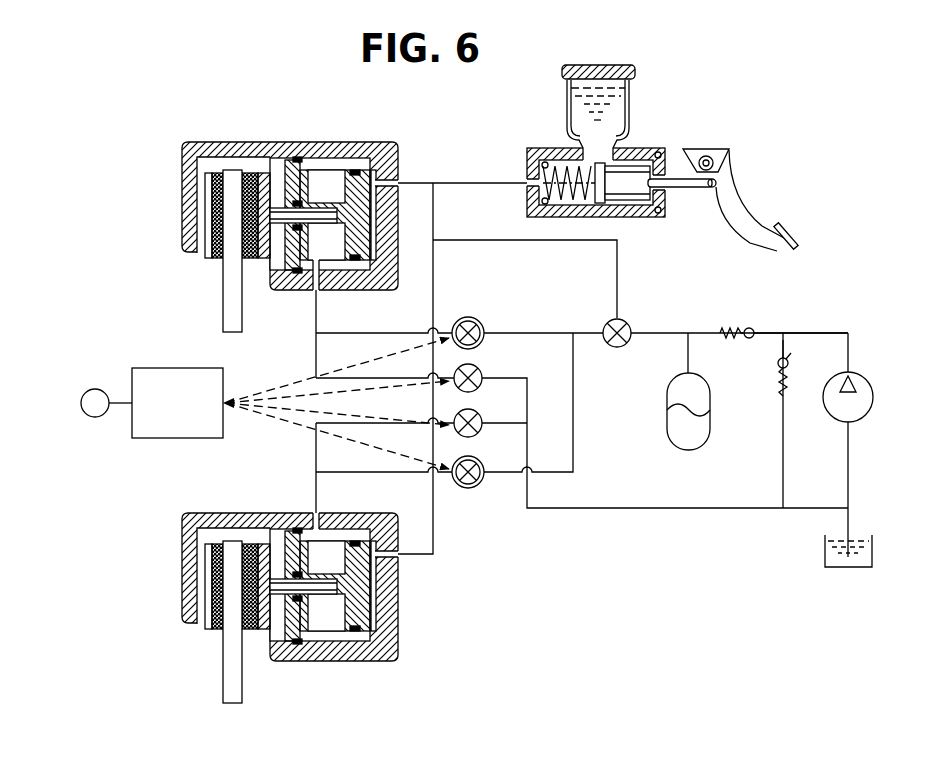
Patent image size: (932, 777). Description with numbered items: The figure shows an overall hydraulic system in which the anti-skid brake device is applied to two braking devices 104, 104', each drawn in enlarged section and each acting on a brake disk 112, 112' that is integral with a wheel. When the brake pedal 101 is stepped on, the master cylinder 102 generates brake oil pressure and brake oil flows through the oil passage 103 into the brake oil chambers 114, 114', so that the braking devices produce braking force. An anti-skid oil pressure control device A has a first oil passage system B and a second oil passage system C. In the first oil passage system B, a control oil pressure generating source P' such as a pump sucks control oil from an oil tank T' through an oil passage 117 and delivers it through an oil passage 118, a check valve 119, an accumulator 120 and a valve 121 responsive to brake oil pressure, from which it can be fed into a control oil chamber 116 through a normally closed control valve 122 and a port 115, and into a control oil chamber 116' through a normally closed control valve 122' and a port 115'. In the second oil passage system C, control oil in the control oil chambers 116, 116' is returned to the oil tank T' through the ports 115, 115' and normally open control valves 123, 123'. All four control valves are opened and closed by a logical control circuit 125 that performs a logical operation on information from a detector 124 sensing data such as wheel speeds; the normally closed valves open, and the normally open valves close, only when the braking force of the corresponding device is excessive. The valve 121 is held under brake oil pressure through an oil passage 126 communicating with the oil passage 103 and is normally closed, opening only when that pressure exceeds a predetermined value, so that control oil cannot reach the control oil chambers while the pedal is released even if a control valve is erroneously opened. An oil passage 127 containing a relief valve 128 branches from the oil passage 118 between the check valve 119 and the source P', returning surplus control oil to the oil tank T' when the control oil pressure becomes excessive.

The brake pedal 101 is at (775, 228).
The master cylinder 102 is at (641, 147).
The oil passage 103 is at (478, 182).
The braking device 104 is at (288, 207).
The braking device 104' is at (287, 587).
The brake disk 112 is at (201, 251).
The brake disk 112' is at (205, 623).
The brake oil chamber 114 is at (408, 168).
The brake oil chamber 114' is at (412, 538).
The port 115 is at (337, 294).
The port 115' is at (299, 504).
The control oil chamber 116 is at (320, 215).
The control oil chamber 116' is at (320, 586).
The oil passage 117 is at (849, 452).
The oil passage 118 is at (811, 330).
The check valve 119 is at (750, 327).
The accumulator 120 is at (668, 410).
The valve responsive to brake oil pressure 121 is at (615, 348).
The normally closed control valve 122 is at (491, 321).
The normally closed control valve 122' is at (490, 458).
The normally open control valve 123 is at (490, 365).
The normally open control valve 123' is at (491, 409).
The detector 124 is at (95, 389).
The logical control circuit 125 is at (192, 416).
The oil passage 126 is at (484, 239).
The oil passage 127 is at (783, 347).
The relief valve 128 is at (777, 366).
The anti-skid oil pressure control device A is at (500, 498).
The first oil passage system B is at (585, 328).
The second oil passage system C is at (531, 431).
The control oil pressure generating source P' is at (861, 397).
The oil tank T' is at (828, 551).